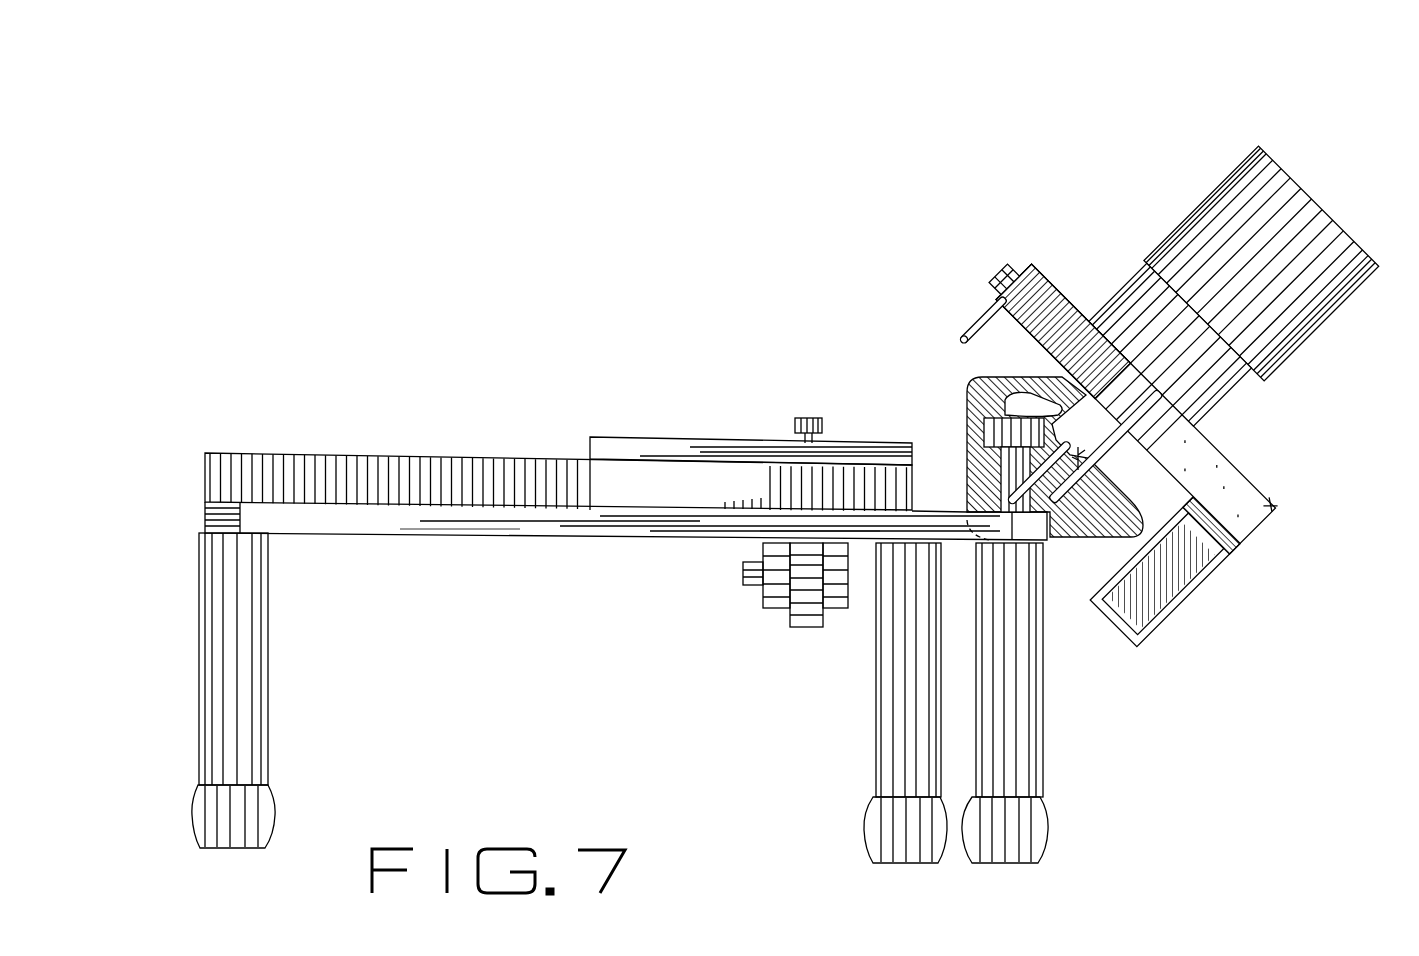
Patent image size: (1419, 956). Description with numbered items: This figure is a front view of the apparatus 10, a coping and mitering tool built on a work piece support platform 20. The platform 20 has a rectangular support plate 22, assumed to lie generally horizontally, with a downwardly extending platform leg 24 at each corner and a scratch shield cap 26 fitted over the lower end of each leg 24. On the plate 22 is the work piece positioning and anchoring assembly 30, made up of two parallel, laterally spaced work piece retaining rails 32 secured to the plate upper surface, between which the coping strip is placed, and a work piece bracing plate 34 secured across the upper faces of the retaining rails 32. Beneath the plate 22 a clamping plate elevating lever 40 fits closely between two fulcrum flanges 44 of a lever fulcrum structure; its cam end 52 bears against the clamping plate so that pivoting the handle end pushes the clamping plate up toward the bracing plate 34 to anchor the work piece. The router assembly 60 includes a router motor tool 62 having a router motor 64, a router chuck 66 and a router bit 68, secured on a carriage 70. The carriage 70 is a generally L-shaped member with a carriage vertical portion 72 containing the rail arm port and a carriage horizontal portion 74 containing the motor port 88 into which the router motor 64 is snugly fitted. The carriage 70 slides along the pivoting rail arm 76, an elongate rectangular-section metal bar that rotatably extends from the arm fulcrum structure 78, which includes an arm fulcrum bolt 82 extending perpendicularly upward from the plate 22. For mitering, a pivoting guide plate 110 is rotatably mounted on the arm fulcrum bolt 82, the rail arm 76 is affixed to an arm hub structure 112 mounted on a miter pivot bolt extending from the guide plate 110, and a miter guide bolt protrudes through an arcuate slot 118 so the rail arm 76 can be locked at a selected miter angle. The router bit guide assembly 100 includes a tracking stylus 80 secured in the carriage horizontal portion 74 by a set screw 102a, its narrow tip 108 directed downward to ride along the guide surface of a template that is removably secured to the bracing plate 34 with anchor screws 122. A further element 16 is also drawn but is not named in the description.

The apparatus 10 is at (378, 198).
The support beam end 16 is at (950, 508).
The work piece support platform 20 is at (412, 540).
The rectangular support plate 22 is at (524, 540).
The platform leg 24 is at (272, 700).
The scratch shield cap 26 is at (276, 822).
The work piece positioning and anchoring assembly 30 is at (557, 302).
The work piece retaining rails 32 is at (443, 463).
The work piece bracing plate 34 is at (668, 437).
The clamping plate elevating lever 40 is at (805, 627).
The fulcrum flanges 44 is at (768, 608).
The cam end 52 is at (742, 576).
The router assembly 60 is at (1024, 78).
The router motor tool 62 is at (1281, 287).
The router motor 64 is at (1218, 364).
The router chuck 66 is at (1168, 611).
The router bit 68 is at (1115, 520).
The carriage 70 is at (1287, 526).
The carriage vertical portion 72 is at (1195, 588).
The carriage horizontal portion 74 is at (1168, 371).
The pivoting rail arm 76 is at (1192, 603).
The arm fulcrum structure 78 is at (883, 204).
The tracking stylus 80 is at (952, 304).
The arm fulcrum bolt 82 is at (972, 418).
The motor port 88 is at (1090, 304).
The router bit guide assembly 100 is at (746, 194).
The set screw 102a is at (977, 243).
The narrow tip 108 is at (918, 337).
The pivoting guide plate 110 is at (1077, 585).
The arm hub structure 112 is at (1230, 227).
The arcuate slot 118 is at (975, 380).
The anchor screws 122 is at (808, 416).